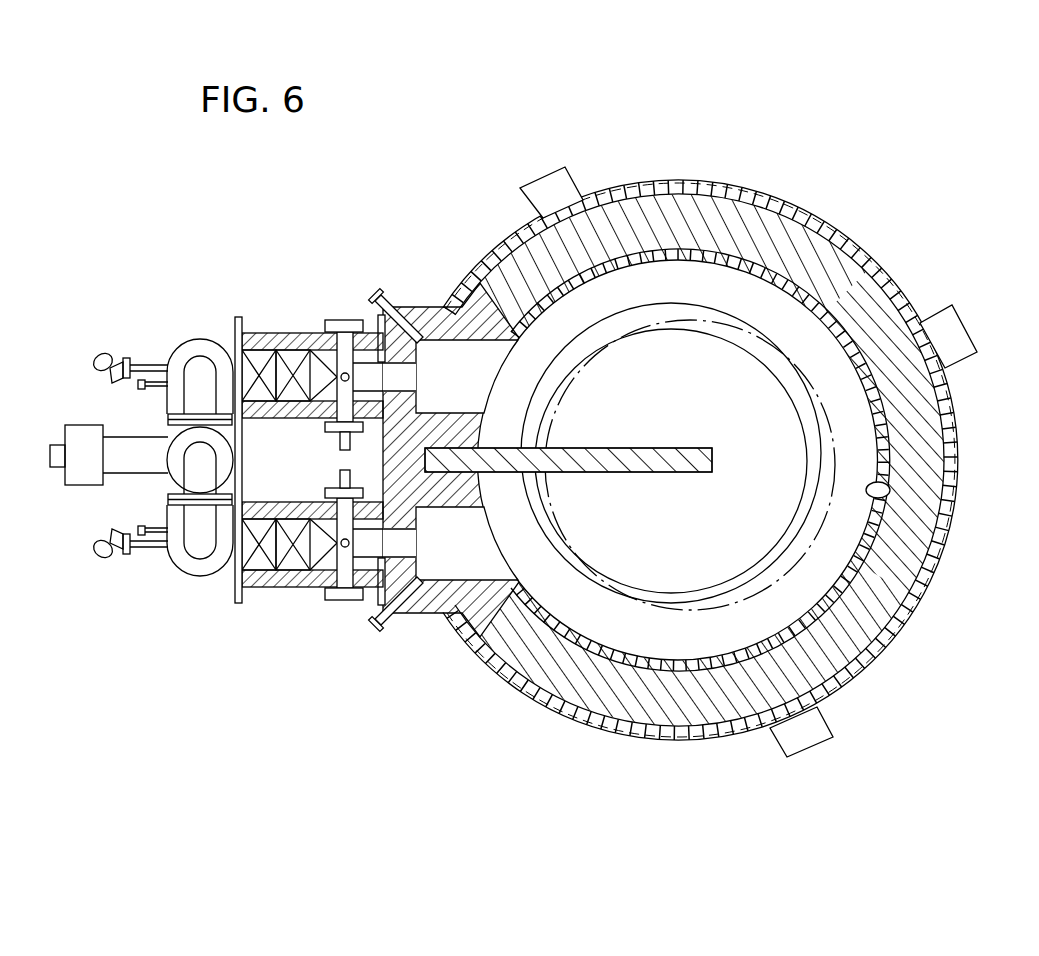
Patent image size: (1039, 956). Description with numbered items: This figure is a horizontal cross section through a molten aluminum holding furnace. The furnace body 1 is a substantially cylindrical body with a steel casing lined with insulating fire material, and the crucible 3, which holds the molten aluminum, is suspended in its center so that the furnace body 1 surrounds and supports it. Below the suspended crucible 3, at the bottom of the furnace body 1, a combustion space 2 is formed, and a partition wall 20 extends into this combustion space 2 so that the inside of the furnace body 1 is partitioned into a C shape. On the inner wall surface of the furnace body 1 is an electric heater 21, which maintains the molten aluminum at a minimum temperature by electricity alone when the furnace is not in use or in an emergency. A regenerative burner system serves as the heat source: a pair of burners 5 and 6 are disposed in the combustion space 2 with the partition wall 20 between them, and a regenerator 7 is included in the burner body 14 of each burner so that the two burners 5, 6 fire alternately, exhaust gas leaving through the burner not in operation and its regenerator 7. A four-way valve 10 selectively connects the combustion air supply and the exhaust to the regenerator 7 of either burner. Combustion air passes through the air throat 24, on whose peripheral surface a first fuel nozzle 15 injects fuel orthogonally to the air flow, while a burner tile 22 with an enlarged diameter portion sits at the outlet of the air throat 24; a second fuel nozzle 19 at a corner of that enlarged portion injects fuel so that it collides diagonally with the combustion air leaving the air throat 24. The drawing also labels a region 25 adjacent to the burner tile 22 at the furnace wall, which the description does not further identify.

The furnace body 1 is at (947, 425).
The combustion space 2 is at (749, 502).
The crucible 3 is at (776, 340).
The burner 5 is at (203, 600).
The burner 6 is at (203, 326).
The regenerator 7 is at (256, 348).
The four-way valve 10 is at (172, 470).
The burner body 14 is at (290, 360).
The first fuel nozzle 15 is at (341, 318).
The second fuel nozzle 19 is at (390, 296).
The partition wall 20 is at (657, 472).
The electric heater 21 is at (885, 488).
The burner tile 22 is at (428, 305).
The air throat 24 is at (411, 391).
The port chamber 25 is at (466, 391).